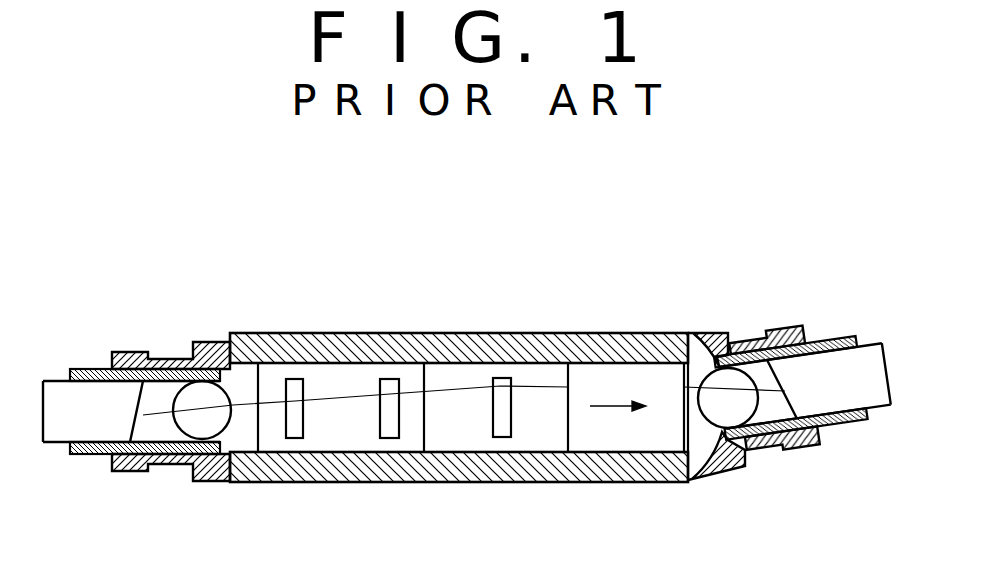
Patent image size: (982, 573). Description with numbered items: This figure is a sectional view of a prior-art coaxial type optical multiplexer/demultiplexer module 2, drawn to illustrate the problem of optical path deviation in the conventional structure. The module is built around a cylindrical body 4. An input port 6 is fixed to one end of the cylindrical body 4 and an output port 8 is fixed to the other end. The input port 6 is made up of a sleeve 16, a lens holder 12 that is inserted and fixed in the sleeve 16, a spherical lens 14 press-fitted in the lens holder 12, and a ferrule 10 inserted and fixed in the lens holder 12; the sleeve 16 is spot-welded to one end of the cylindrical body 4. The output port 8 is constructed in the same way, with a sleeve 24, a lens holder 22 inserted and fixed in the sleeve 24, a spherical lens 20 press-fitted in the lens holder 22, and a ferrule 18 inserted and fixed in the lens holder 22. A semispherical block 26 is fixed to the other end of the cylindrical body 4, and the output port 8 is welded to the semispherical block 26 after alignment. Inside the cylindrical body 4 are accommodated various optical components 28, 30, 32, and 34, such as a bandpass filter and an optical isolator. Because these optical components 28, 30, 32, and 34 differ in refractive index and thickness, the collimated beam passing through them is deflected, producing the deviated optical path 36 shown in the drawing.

The coaxial type optical multiplexer/demultiplexer module 2 is at (443, 333).
The cylindrical body 4 is at (474, 483).
The input port 6 is at (172, 471).
The output port 8 is at (766, 451).
The ferrule 10 is at (53, 395).
The lens holder 12 is at (87, 455).
The spherical lens 14 is at (226, 420).
The sleeve 16 is at (172, 356).
The ferrule 18 is at (872, 399).
The spherical lens 20 is at (706, 421).
The lens holder 22 is at (843, 340).
The sleeve 24 is at (762, 340).
The semispherical block 26 is at (713, 340).
The optical component 28 is at (295, 378).
The optical component 30 is at (390, 378).
The optical component 32 is at (500, 378).
The optical component 34 is at (623, 382).
The deviated optical path 36 is at (250, 398).